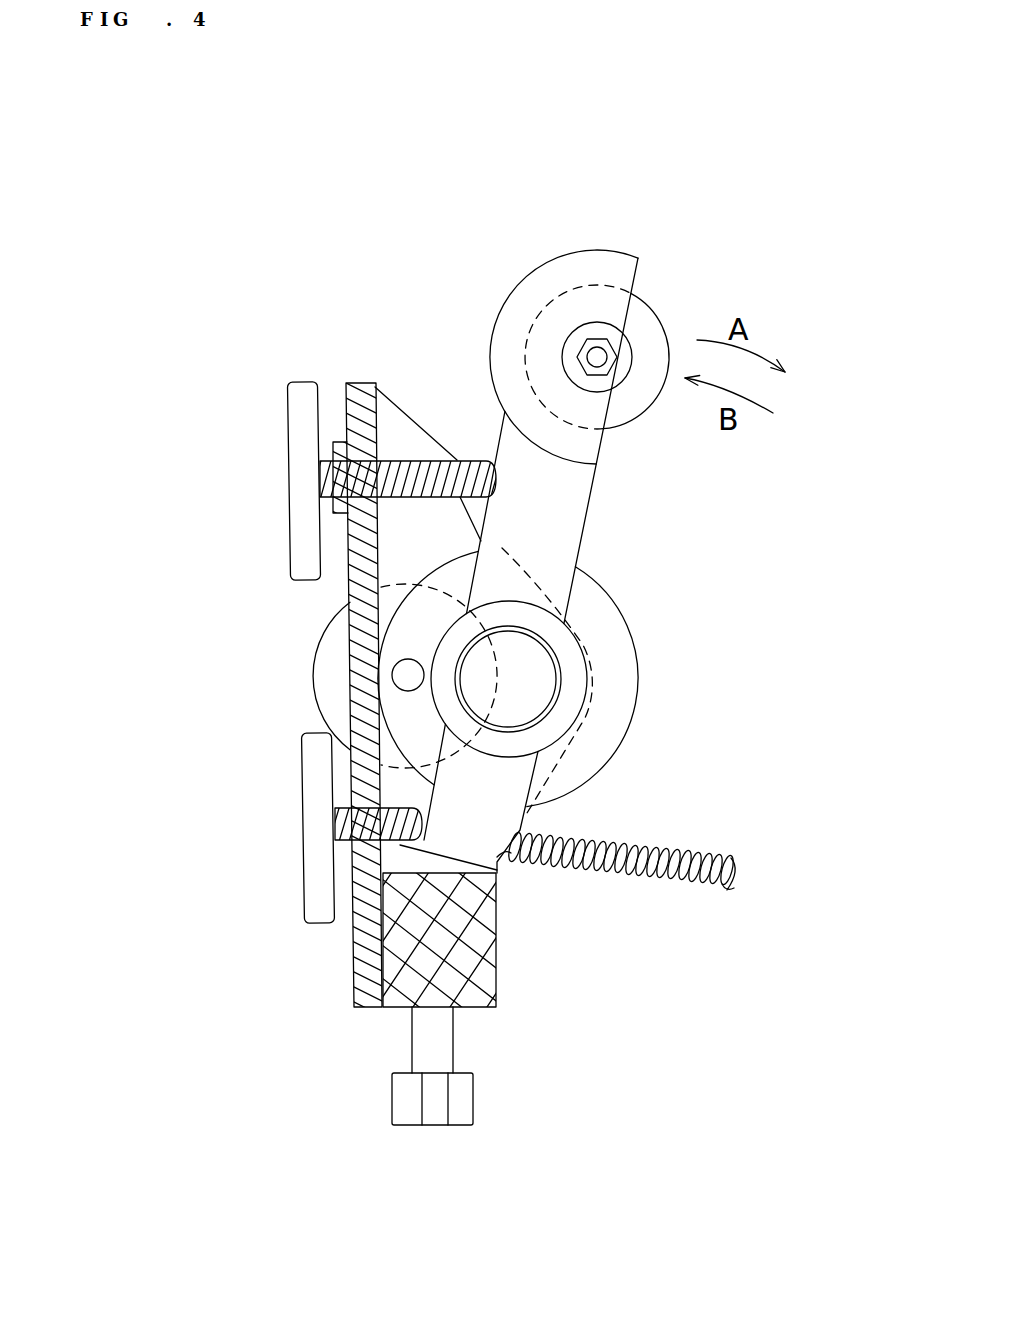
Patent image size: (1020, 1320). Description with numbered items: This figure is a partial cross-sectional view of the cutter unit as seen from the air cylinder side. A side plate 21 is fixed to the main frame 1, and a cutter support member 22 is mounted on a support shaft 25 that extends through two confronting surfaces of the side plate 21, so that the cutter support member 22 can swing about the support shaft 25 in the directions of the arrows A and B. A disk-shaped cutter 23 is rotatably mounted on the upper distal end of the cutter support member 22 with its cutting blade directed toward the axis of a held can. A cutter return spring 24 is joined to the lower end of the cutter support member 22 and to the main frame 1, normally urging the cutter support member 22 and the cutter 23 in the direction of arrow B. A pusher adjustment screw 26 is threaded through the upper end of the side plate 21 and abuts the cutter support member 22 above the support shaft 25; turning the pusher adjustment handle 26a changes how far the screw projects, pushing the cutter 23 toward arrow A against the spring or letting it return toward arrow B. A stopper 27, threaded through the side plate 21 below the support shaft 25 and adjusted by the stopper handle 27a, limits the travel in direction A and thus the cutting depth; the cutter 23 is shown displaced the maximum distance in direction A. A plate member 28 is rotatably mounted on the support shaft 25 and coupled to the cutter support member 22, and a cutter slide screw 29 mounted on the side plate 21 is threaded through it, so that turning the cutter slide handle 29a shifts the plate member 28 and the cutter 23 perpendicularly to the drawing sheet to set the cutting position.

The main frame 1 is at (462, 1003).
The side plate 21 is at (378, 948).
The cutter support member 22 is at (570, 550).
The cutter 23 is at (645, 315).
The cutter return spring 24 is at (657, 883).
The support shaft 25 is at (533, 703).
The pusher adjustment screw 26 is at (457, 460).
The pusher adjustment handle 26a is at (303, 380).
The stopper 27 is at (397, 840).
The stopper handle 27a is at (317, 922).
The plate member 28 is at (622, 698).
The cutter slide screw 29 is at (408, 683).
The cutter slide handle 29a is at (313, 670).